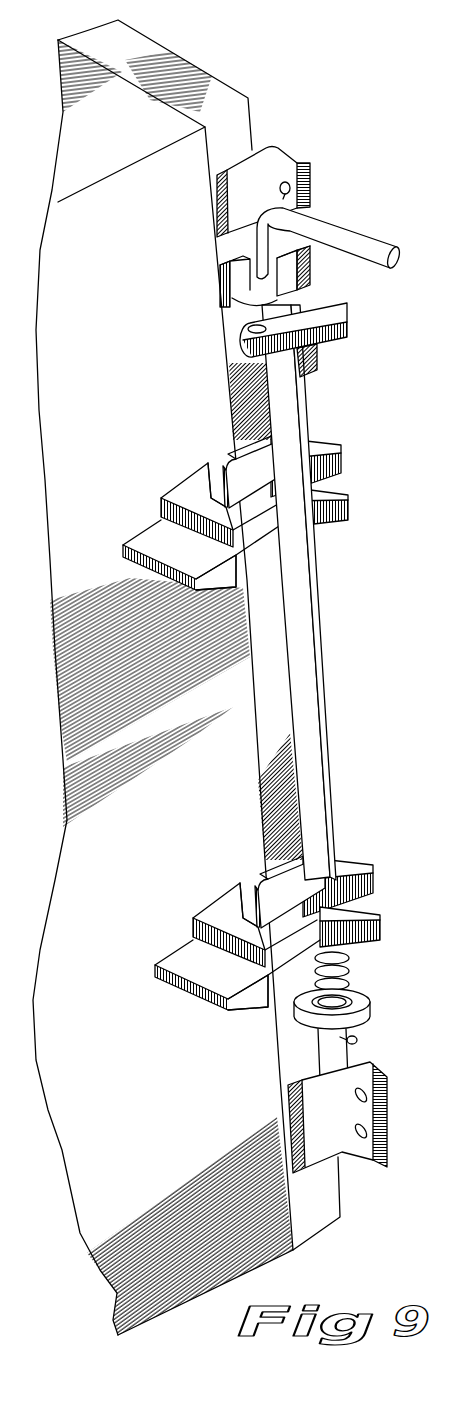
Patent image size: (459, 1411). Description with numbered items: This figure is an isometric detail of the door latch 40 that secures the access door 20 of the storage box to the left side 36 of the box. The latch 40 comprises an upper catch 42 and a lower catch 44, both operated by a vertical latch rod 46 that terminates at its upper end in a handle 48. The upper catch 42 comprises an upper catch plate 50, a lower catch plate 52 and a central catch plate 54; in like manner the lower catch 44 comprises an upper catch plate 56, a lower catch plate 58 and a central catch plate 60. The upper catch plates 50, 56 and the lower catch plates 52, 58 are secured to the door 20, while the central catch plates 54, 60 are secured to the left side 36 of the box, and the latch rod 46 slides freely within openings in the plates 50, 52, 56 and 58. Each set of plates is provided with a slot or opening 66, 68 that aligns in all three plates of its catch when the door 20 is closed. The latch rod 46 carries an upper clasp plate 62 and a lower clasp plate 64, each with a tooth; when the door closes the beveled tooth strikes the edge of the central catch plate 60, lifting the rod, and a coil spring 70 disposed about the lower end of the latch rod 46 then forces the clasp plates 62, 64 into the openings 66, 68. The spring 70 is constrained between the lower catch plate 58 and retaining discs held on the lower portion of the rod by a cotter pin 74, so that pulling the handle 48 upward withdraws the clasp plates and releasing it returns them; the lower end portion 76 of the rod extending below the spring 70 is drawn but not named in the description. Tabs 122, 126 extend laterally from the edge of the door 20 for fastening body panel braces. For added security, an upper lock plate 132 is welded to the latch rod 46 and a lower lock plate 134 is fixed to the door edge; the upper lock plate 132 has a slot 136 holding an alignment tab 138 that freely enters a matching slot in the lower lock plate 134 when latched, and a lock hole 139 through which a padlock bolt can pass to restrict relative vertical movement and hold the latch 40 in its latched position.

The door 20 is at (190, 50).
The left side 36 is at (140, 370).
The door latch 40 is at (266, 657).
The upper catch 42 is at (235, 503).
The lower catch 44 is at (268, 922).
The latch rod 46 is at (327, 727).
The handle 48 is at (352, 229).
The upper catch plate 50 is at (186, 497).
The lower catch plate 52 is at (335, 518).
The central catch plate 54 is at (140, 542).
The upper catch plate 56 is at (220, 917).
The lower catch plate 58 is at (363, 942).
The central catch plate 60 is at (173, 965).
The upper clasp plate 62 is at (253, 448).
The lower clasp plate 64 is at (287, 870).
The slot or opening 66 is at (218, 490).
The slot or opening 68 is at (247, 917).
The spring 70 is at (353, 975).
The cotter pin 74 is at (360, 1038).
The threaded rod 76 is at (320, 1055).
The tab 122 is at (286, 147).
The tab 126 is at (358, 1167).
The upper lock plate 132 is at (247, 280).
The lower lock plate 134 is at (350, 334).
The slot 136 is at (277, 303).
The alignment tab 138 is at (320, 372).
The lock hole 139 is at (247, 328).